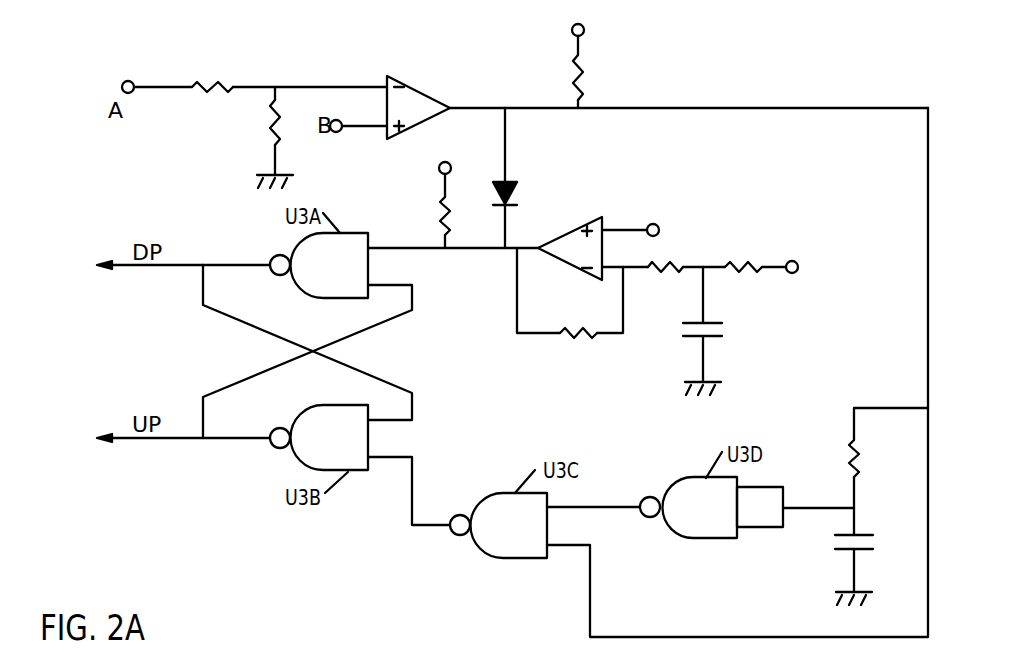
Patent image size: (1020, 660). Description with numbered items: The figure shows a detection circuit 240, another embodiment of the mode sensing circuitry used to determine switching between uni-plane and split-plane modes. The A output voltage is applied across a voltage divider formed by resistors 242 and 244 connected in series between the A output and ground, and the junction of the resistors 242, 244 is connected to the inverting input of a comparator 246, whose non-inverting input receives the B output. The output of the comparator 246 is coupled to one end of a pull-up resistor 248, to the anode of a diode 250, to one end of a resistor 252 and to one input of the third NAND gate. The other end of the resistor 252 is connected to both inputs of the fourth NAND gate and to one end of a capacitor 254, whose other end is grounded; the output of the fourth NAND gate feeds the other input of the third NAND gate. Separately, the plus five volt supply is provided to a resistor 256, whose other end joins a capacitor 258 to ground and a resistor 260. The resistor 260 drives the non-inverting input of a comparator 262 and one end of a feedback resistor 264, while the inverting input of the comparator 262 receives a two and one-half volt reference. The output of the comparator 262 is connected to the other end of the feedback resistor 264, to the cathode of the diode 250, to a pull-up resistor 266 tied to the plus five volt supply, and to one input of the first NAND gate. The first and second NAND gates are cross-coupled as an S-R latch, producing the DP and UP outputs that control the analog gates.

The detection circuit 240 is at (775, 60).
The resistor 242 is at (232, 84).
The resistor 244 is at (281, 140).
The comparator 246 is at (418, 85).
The pull-up resistor 248 is at (570, 65).
The diode 250 is at (518, 195).
The resistor 252 is at (848, 448).
The capacitor 254 is at (868, 534).
The resistor 256 is at (749, 264).
The capacitor 258 is at (715, 340).
The resistor 260 is at (665, 264).
The comparator 262 is at (585, 273).
The feedback resistor 264 is at (572, 342).
The pull-up resistor 266 is at (437, 205).